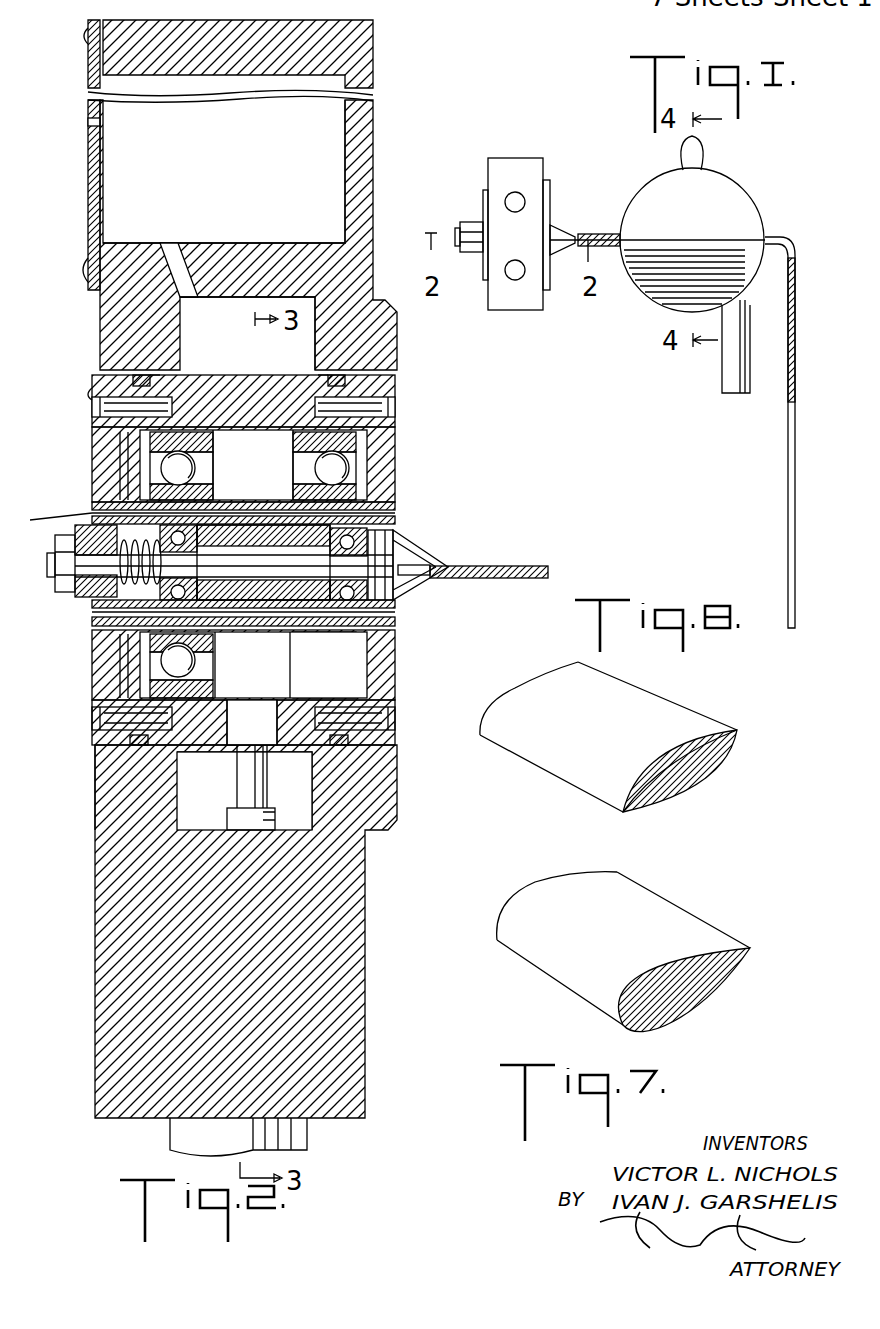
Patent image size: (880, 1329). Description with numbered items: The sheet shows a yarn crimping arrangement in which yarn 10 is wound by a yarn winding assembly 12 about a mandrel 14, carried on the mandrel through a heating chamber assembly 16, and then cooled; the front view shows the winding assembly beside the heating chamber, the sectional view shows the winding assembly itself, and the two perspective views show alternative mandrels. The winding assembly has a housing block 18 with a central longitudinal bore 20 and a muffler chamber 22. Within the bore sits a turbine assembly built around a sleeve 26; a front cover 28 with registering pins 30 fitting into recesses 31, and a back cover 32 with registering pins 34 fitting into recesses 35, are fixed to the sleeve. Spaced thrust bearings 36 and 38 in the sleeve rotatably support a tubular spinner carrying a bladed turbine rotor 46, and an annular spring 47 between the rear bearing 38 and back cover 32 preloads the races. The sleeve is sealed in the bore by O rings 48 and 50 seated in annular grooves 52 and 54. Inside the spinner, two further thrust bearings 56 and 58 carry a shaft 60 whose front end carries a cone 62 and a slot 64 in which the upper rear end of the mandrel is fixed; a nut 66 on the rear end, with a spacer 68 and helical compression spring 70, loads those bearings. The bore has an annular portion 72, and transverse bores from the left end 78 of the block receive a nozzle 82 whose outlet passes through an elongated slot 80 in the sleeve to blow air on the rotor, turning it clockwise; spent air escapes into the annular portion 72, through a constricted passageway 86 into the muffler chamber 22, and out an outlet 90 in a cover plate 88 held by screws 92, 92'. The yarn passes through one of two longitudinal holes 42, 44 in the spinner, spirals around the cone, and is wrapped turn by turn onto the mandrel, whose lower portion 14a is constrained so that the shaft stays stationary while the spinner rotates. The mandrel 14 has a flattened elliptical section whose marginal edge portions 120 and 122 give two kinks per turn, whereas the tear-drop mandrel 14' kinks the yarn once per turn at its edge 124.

In FIG. 2, the yarn 10 is at (30, 520).
In FIG. 1, the yarn 10 is at (455, 212).
In FIG. 1, the yarn winding assembly 12 is at (569, 207).
In FIG. 1, the mandrel 14 is at (657, 276).
In FIG. 6, the mandrel 14 is at (608, 733).
In FIG. 7, the mandrel 14' is at (628, 940).
In FIG. 1, the float arm rod portion 14a is at (788, 546).
In FIG. 1, the heating chamber assembly 16 is at (762, 200).
In FIG. 2, the housing block 18 is at (366, 1018).
In FIG. 2, the central longitudinal bore 20 is at (152, 760).
In FIG. 2, the muffler chamber 22 is at (248, 162).
In FIG. 2, the sleeve 26 is at (214, 360).
In FIG. 2, the front cover 28 is at (420, 338).
In FIG. 2, the registering pins 30 is at (382, 408).
In FIG. 2, the recesses 31 is at (386, 700).
In FIG. 2, the back cover 32 is at (92, 672).
In FIG. 2, the registering pins 34 is at (92, 407).
In FIG. 2, the recesses 35 is at (86, 392).
In FIG. 2, the thrust bearing 36 is at (368, 480).
In FIG. 2, the thrust bearing 38 is at (142, 474).
In FIG. 2, the longitudinal hole 42 is at (388, 522).
In FIG. 2, the longitudinal hole 44 is at (398, 618).
In FIG. 2, the turbine rotor 46 is at (270, 486).
In FIG. 2, the annular spring 47 is at (92, 700).
In FIG. 2, the O ring 48 is at (340, 374).
In FIG. 2, the O ring 50 is at (141, 374).
In FIG. 2, the annular groove 52 is at (322, 376).
In FIG. 2, the annular groove 54 is at (158, 372).
In FIG. 2, the thrust bearing 56 is at (448, 565).
In FIG. 2, the thrust bearing 58 is at (204, 545).
In FIG. 2, the shaft 60 is at (252, 572).
In FIG. 2, the cone 62 is at (440, 560).
In FIG. 2, the slot 64 is at (432, 578).
In FIG. 2, the nut 66 is at (58, 592).
In FIG. 2, the spacer 68 is at (100, 586).
In FIG. 2, the helical compression spring 70 is at (90, 600).
In FIG. 2, the annular portion 72 is at (258, 310).
In FIG. 2, the left end 78 is at (140, 1120).
In FIG. 2, the elongated slot 80 is at (272, 760).
In FIG. 2, the nozzle 82 is at (240, 780).
In FIG. 2, the constricted passageway 86 is at (188, 252).
In FIG. 2, the cover plate 88 is at (86, 172).
In FIG. 2, the outlet 90 is at (88, 122).
In FIG. 2, the screws 92 is at (62, 293).
In FIG. 2, the seal ring 92' is at (204, 61).
In FIG. 6, the marginal edge portion 120 is at (620, 815).
In FIG. 6, the marginal edge portion 122 is at (740, 732).
In FIG. 7, the edge 124 is at (750, 949).